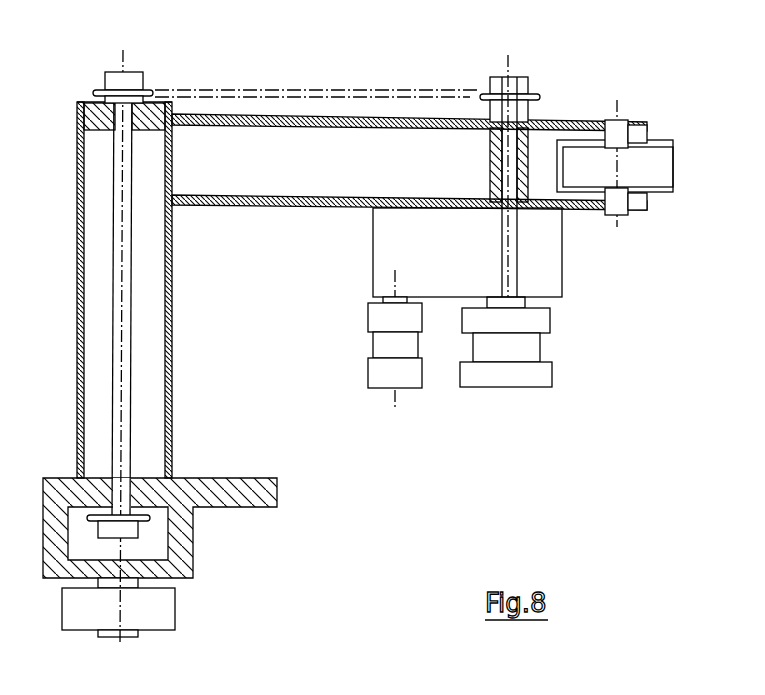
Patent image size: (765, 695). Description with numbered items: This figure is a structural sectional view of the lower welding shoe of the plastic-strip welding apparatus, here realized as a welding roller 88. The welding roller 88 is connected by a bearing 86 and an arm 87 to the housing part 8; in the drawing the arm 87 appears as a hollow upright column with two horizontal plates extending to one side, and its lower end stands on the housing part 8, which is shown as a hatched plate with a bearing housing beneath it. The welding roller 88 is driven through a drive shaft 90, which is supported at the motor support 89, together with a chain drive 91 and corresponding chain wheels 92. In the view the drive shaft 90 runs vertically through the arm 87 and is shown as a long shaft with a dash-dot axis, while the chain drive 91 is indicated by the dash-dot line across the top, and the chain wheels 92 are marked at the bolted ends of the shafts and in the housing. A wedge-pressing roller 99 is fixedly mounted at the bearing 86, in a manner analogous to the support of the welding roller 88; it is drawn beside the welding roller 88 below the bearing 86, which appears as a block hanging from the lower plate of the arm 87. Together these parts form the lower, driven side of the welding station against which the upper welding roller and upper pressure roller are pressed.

The housing part 8 is at (205, 493).
The bearing 86 is at (543, 287).
The arm 87 is at (171, 280).
The welding roller 88 is at (533, 373).
The motor support 89 is at (182, 558).
The drive shaft 90 is at (124, 350).
The chain drive 91 is at (332, 89).
The chain wheels 92 is at (98, 88).
The wedge-pressing roller 99 is at (409, 373).